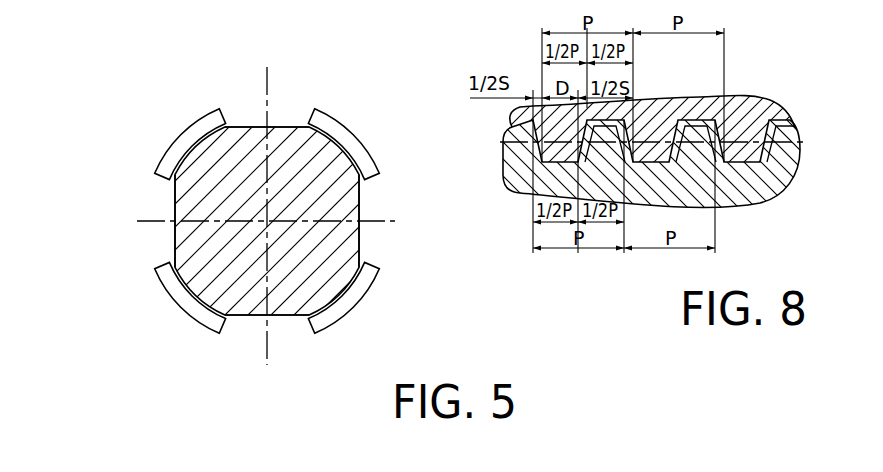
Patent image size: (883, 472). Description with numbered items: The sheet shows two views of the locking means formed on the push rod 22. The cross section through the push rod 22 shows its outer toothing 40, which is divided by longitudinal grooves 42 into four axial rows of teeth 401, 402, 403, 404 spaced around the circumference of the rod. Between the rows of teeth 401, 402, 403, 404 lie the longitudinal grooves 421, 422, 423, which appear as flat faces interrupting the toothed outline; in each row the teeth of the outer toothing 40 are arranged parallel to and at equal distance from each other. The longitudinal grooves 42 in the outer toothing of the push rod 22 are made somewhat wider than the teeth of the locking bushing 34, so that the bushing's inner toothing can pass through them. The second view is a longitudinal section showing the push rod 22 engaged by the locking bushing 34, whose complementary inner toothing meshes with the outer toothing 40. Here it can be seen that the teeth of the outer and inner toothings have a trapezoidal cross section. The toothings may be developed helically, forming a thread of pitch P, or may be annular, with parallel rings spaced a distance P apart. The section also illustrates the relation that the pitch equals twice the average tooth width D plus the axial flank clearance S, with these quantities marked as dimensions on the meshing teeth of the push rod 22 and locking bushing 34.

In FIG. 5, the push rod 22 is at (188, 207).
In FIG. 8, the push rod 22 is at (780, 177).
In FIG. 8, the locking bushing 34 is at (766, 103).
In FIG. 5, the outer toothing 40 is at (266, 225).
In FIG. 5, the axial row of teeth 401 is at (358, 114).
In FIG. 5, the axial row of teeth 402 is at (355, 324).
In FIG. 5, the axial row of teeth 403 is at (180, 324).
In FIG. 5, the axial row of teeth 404 is at (176, 118).
In FIG. 5, the longitudinal grooves 42 is at (268, 222).
In FIG. 5, the longitudinal groove 421 is at (286, 116).
In FIG. 5, the longitudinal groove 422 is at (372, 235).
In FIG. 5, the longitudinal groove 423 is at (235, 363).